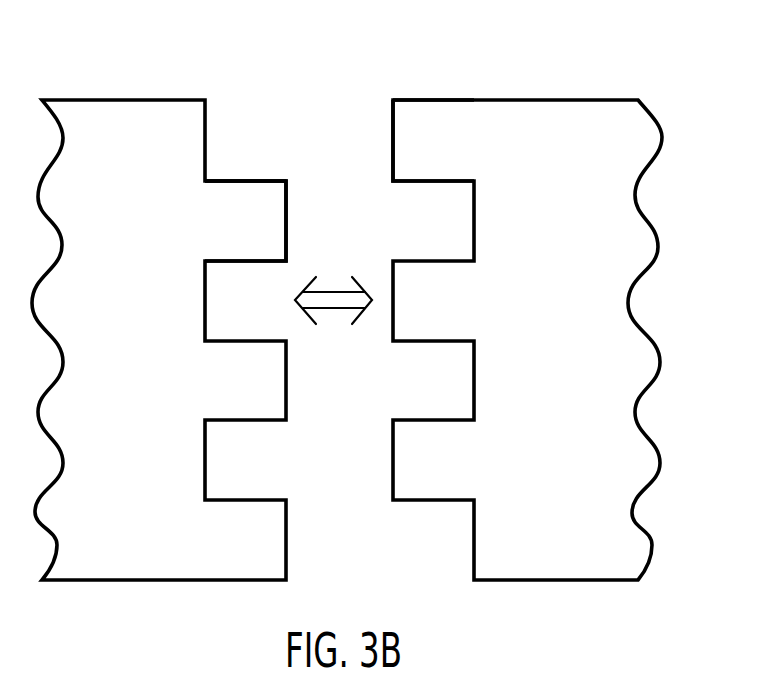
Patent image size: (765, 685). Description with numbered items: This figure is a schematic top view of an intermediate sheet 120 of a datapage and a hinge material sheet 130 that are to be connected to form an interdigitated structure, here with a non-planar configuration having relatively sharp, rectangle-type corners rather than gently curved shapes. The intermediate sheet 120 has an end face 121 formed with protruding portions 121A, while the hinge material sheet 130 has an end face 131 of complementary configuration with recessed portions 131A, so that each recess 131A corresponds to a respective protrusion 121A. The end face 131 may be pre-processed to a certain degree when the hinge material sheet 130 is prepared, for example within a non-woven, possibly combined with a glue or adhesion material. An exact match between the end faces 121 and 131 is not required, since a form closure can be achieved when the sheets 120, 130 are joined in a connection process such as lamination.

The hinge material sheet 130 is at (174, 77).
The end face 131 is at (281, 157).
The recess 131A is at (275, 172).
The intermediate sheet 120 is at (580, 74).
The end face 121 is at (410, 74).
The protrusion 121A is at (452, 100).